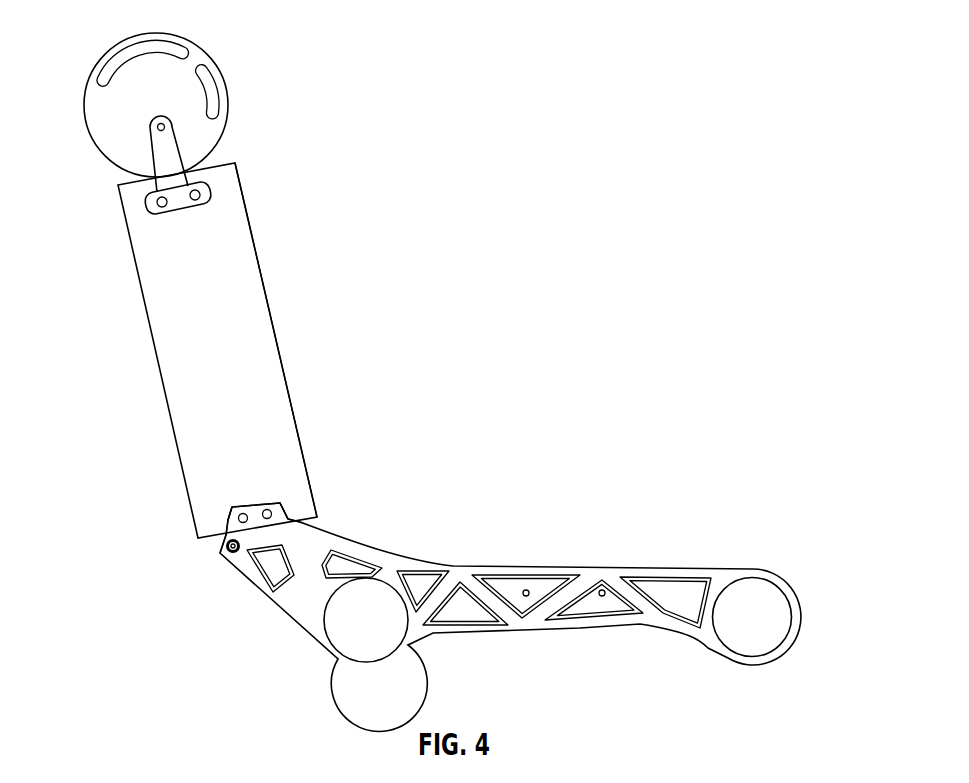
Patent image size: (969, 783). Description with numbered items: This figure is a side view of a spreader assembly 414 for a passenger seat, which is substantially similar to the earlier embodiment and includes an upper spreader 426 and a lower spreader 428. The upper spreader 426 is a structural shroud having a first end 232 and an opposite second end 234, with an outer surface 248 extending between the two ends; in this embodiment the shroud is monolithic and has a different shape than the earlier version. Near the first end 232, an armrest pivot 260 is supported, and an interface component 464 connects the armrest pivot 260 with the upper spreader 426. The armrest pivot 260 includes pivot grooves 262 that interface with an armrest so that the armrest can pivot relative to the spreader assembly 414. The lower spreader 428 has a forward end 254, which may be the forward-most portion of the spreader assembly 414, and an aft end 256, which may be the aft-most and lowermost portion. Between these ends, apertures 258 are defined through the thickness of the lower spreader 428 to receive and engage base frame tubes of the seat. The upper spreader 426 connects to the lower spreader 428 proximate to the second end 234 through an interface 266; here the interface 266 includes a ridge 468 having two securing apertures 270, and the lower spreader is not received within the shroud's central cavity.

The first end 232 is at (234, 162).
The armrest pivot 260 is at (212, 76).
The pivot grooves 262 is at (127, 64).
The interface component 464 is at (210, 192).
The outer surface 248 is at (235, 272).
The upper spreader 426 is at (282, 367).
The spreader assembly 414 is at (552, 143).
The forward end 254 is at (800, 622).
The apertures 258 is at (345, 647).
The lower spreader 428 is at (466, 583).
The ridge 468 is at (242, 505).
The interface 266 is at (254, 510).
The securing apertures 270 is at (230, 520).
The second end 234 is at (222, 533).
The aft end 256 is at (223, 553).